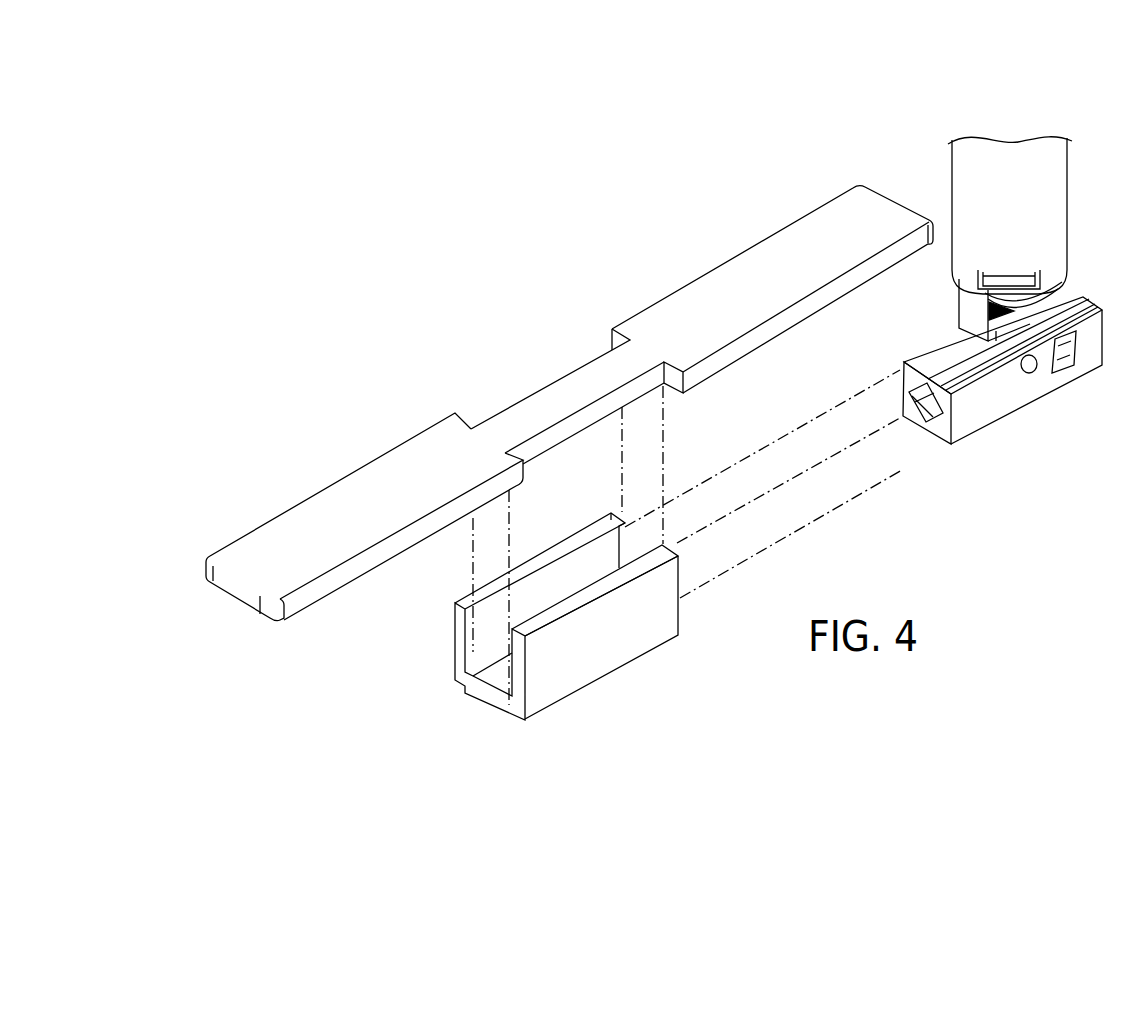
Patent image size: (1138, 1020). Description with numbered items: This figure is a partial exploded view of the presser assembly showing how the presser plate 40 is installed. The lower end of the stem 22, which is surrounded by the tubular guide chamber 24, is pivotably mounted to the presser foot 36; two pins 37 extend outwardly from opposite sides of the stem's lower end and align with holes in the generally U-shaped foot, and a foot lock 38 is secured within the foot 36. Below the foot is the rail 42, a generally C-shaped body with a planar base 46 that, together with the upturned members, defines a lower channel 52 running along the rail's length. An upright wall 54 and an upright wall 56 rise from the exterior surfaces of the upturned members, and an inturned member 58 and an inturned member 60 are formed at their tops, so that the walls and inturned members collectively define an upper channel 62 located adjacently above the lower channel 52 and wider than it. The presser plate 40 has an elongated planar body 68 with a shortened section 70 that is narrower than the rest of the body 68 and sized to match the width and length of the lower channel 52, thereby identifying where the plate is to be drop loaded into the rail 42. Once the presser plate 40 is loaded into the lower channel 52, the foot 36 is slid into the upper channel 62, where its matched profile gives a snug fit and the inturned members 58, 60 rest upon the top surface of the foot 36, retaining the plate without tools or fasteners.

The stem 22 is at (963, 302).
The tubular guide chamber 24 is at (1037, 203).
The presser foot 36 is at (890, 370).
The pins 37 is at (1026, 364).
The foot lock 38 is at (920, 392).
The presser plate 40 is at (305, 398).
The rail 42 is at (580, 643).
The planar base 46 is at (490, 668).
The lower channel 52 is at (489, 684).
The upright wall 54 is at (449, 624).
The upright wall 56 is at (660, 615).
The inturned member 58 is at (582, 530).
The inturned member 60 is at (598, 577).
The upper channel 62 is at (634, 540).
The elongated planar body 68 is at (730, 251).
The shortened section 70 is at (548, 380).